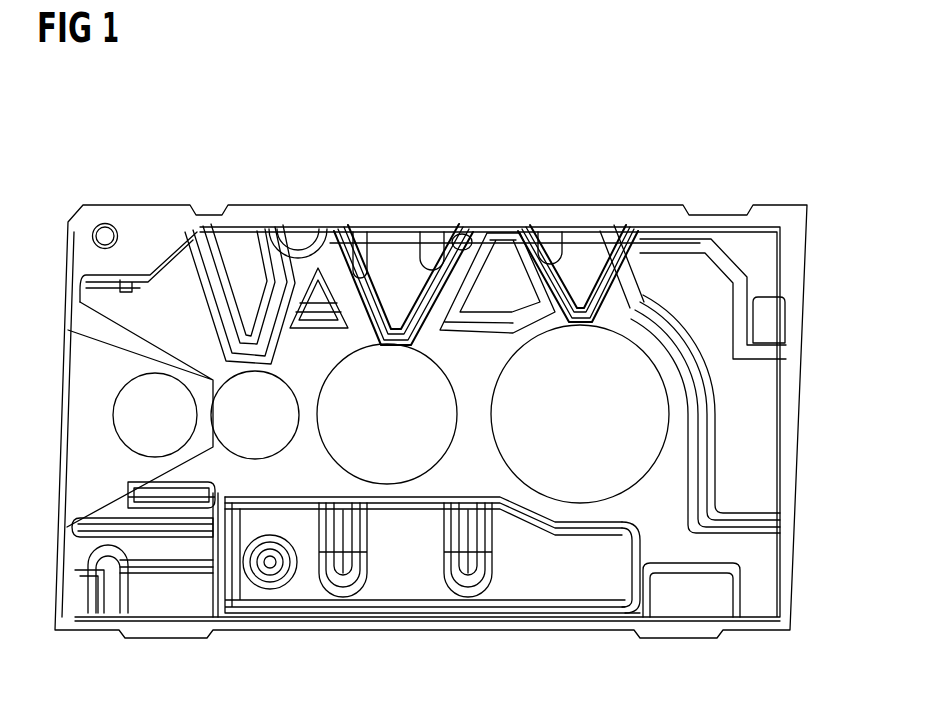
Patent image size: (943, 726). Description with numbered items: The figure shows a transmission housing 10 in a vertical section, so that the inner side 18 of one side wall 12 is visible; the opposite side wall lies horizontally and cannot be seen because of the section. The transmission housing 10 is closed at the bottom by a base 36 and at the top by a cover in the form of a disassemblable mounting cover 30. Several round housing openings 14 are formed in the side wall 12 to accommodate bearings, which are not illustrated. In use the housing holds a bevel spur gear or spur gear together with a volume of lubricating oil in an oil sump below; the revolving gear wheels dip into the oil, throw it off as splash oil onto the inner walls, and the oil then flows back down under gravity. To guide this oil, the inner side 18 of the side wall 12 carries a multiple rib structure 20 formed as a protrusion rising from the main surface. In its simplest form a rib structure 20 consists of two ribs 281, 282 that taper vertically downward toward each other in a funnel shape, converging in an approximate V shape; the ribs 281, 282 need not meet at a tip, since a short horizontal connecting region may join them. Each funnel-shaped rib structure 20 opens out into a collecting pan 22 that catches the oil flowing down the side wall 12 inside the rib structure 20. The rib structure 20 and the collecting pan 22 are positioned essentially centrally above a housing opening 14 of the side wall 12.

The transmission housing 10 is at (272, 138).
The side wall 12 is at (383, 566).
The housing openings 14 is at (285, 468).
The inner side 18 is at (313, 570).
The rib structure 20 is at (357, 232).
The collecting pan 22 is at (653, 290).
The rib 281 is at (531, 233).
The rib 282 is at (647, 215).
The mounting cover 30 is at (488, 233).
The base 36 is at (520, 613).